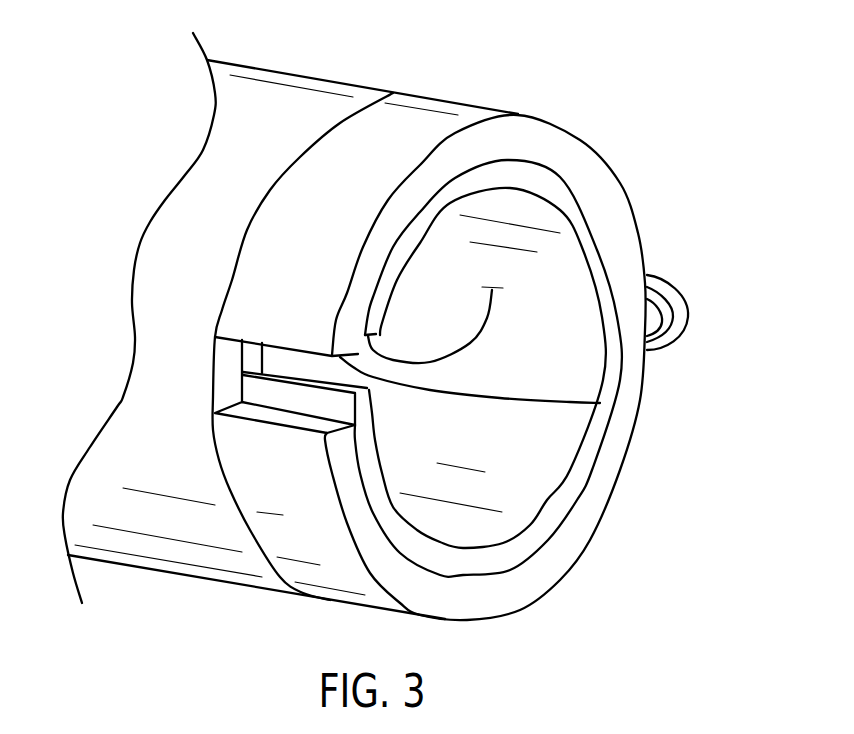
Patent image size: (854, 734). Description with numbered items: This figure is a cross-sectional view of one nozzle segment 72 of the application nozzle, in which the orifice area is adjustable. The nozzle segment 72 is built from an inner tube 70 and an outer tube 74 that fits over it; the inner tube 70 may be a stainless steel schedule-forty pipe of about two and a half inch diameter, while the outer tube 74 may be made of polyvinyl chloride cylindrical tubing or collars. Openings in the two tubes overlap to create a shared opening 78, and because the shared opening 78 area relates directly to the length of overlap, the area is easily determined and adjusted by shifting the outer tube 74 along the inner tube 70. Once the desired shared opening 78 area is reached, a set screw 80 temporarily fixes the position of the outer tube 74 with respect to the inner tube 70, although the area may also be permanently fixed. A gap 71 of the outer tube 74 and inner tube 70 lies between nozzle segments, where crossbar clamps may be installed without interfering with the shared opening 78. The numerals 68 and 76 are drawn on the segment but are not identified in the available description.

The inner bore surface 68 is at (492, 290).
The inner tube 70 is at (602, 253).
The gap 71 is at (167, 385).
The nozzle segment 72 is at (313, 102).
The outer tube 74 is at (607, 195).
The slot edge 76 is at (600, 403).
The shared opening 78 is at (292, 366).
The set screw 80 is at (677, 300).